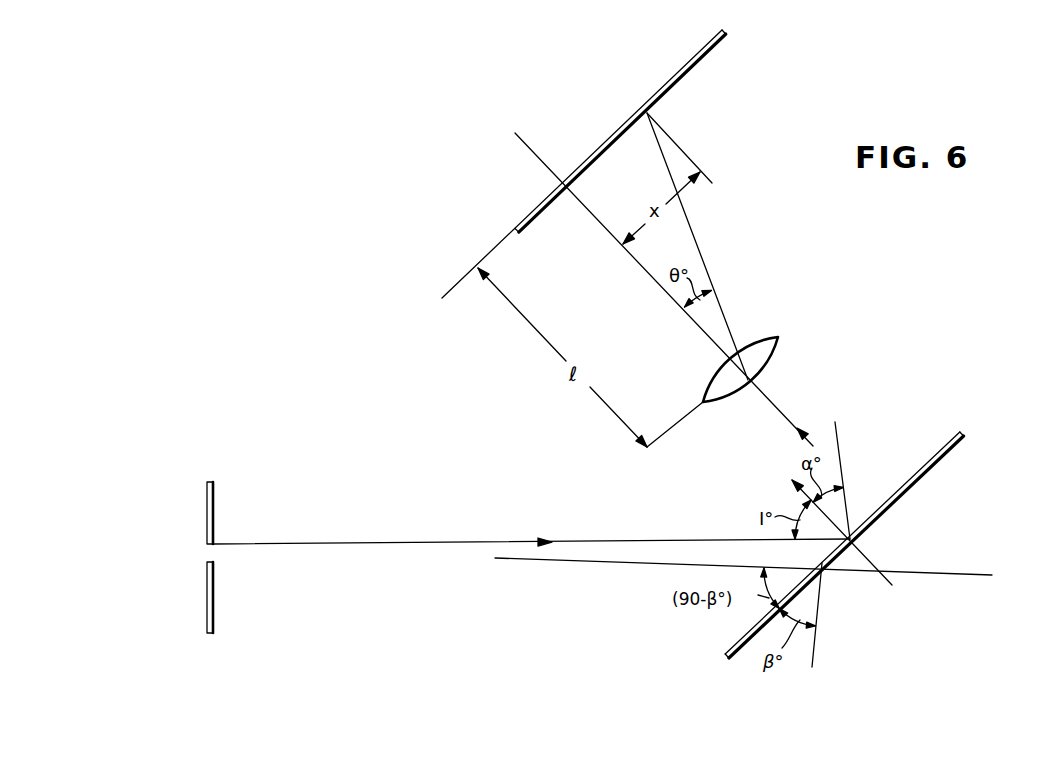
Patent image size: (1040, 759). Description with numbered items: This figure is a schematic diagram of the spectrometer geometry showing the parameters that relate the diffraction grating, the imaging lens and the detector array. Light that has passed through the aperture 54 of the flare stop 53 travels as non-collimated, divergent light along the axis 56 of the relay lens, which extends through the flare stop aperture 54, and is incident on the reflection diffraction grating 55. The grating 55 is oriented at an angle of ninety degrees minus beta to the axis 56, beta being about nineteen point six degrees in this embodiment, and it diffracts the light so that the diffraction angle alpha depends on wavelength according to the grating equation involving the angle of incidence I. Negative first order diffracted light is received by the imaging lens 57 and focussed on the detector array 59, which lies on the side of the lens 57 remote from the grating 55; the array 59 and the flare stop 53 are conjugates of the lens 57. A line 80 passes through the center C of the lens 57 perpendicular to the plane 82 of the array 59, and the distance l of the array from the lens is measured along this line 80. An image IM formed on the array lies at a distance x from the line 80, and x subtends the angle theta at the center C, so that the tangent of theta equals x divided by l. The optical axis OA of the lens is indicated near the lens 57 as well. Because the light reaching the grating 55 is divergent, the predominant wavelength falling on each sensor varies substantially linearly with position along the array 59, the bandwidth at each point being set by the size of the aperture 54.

The flare stop 53 is at (211, 482).
The aperture 54 is at (210, 563).
The reflection diffraction grating 55 is at (963, 437).
The axis 56 is at (620, 562).
The imaging lens 57 is at (778, 337).
The detector array 59 is at (727, 33).
The line 80 is at (541, 156).
The plane 82 is at (468, 281).
The image IM is at (648, 114).
The center C is at (745, 365).
The optical axis OA is at (784, 409).